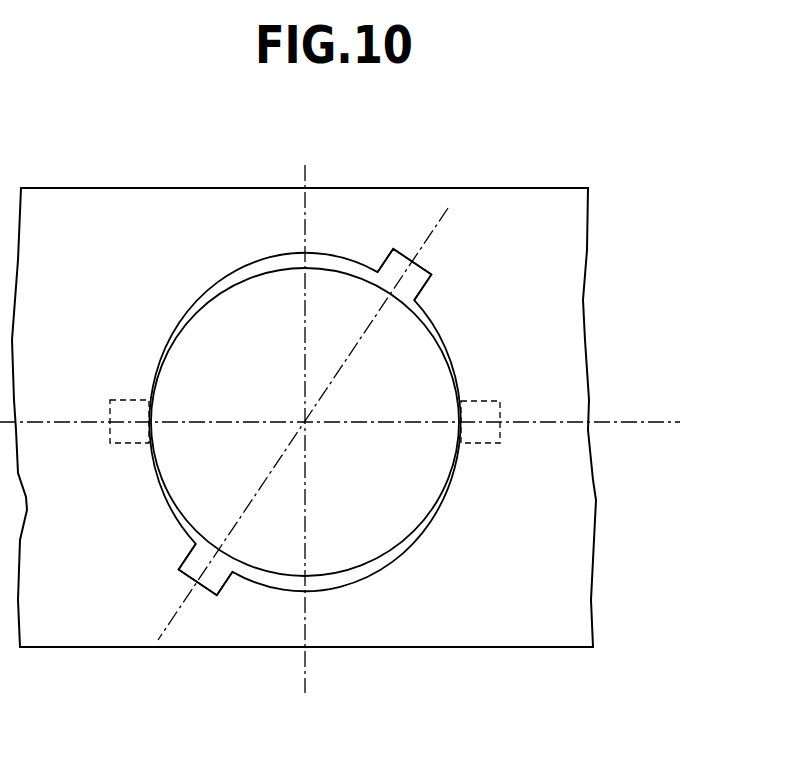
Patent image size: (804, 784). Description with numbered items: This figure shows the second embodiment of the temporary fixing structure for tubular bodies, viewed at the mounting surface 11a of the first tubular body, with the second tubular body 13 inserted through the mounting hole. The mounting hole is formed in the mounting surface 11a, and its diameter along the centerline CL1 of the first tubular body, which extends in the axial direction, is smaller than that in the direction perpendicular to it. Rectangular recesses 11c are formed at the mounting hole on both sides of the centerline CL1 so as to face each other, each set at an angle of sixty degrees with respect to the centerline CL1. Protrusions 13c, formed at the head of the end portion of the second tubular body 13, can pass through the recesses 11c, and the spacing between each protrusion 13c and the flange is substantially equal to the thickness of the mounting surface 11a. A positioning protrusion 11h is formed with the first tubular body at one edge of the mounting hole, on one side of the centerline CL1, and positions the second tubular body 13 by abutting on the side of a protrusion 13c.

The second tubular body 13 is at (338, 254).
The protrusion 13c is at (130, 400).
The recess 11c is at (431, 270).
The mounting surface 11a is at (563, 254).
The positioning protrusion 11h is at (467, 452).
The centerline CL1 is at (561, 421).